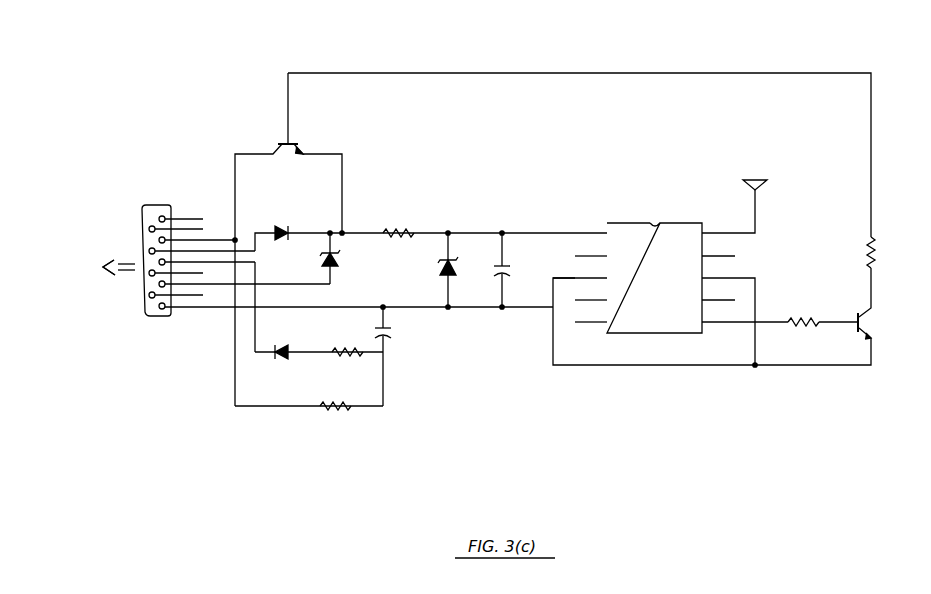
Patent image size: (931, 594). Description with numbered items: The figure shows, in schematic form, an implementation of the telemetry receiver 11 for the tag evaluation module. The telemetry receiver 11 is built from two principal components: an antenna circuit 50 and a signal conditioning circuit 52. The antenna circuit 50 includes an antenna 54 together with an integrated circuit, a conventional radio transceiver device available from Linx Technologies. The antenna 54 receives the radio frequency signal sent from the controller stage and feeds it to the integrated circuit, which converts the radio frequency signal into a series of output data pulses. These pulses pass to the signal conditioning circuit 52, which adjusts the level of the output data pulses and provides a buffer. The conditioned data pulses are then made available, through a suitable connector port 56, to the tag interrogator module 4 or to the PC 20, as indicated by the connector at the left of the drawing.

The telemetry receiver 11 is at (770, 41).
The connector port 56 is at (173, 193).
The signal conditioning circuit 52 is at (431, 211).
The antenna circuit 50 is at (667, 198).
The antenna 54 is at (676, 334).
The tag interrogator module 4 is at (79, 291).
The PC 20 is at (76, 304).